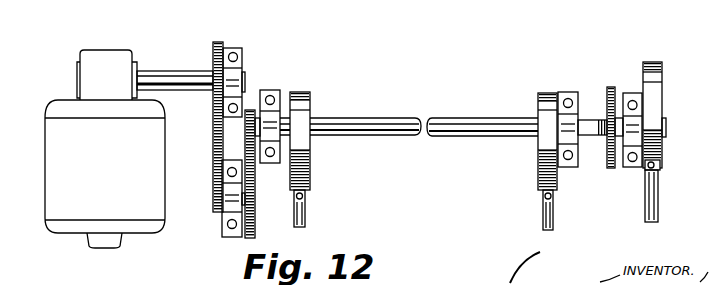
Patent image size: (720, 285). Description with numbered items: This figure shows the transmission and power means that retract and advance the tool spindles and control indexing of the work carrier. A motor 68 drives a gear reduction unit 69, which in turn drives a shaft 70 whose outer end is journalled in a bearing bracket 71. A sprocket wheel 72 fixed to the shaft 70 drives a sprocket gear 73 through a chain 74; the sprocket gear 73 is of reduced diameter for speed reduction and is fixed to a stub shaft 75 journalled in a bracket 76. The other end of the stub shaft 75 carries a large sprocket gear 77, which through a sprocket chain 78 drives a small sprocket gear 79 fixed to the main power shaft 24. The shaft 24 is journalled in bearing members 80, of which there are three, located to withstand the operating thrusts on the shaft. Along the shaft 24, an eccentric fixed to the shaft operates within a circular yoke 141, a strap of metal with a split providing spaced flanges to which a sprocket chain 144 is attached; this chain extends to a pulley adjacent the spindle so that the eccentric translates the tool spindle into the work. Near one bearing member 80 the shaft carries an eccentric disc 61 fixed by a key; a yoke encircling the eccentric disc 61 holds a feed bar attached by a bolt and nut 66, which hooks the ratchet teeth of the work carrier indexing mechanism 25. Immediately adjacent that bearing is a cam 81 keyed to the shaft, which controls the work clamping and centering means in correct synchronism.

The motor 68 is at (52, 163).
The gear reduction unit 69 is at (103, 58).
The shaft 70 is at (164, 71).
The bearing bracket 71 is at (237, 72).
The sprocket wheel 72 is at (213, 45).
The sprocket gear 73 is at (213, 203).
The chain 74 is at (214, 143).
The stub shaft 75 is at (250, 204).
The bracket 76 is at (232, 205).
The large sprocket gear 77 is at (256, 187).
The sprocket chain 78 is at (239, 136).
The small sprocket gear 79 is at (258, 108).
The bearing members 80 is at (278, 95).
The main power shaft 24 is at (376, 119).
The circular yoke 141 is at (305, 151).
The sprocket chain 144 is at (305, 212).
The cam 81 is at (610, 86).
The eccentric disc 61 is at (658, 92).
The bolt and nut 66 is at (661, 165).
The work carrier indexing mechanism 25 is at (658, 190).